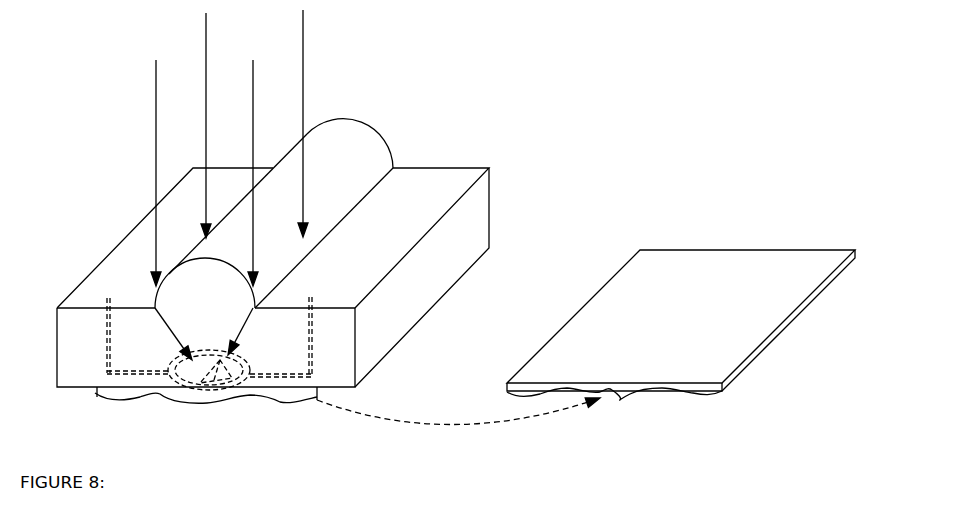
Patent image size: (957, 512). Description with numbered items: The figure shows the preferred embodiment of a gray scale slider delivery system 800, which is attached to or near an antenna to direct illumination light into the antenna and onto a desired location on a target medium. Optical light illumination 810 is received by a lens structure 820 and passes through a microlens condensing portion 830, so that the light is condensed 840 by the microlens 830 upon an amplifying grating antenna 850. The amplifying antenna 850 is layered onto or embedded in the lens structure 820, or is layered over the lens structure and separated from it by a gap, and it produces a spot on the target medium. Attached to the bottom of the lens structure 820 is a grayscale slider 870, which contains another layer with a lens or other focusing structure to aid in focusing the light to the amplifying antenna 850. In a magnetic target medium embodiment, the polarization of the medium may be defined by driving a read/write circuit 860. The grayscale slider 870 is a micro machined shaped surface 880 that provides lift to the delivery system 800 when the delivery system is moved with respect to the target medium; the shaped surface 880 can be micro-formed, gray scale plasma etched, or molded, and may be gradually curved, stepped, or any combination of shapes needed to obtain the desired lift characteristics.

The delivery system 800 is at (432, 113).
The optical light illumination 810 is at (155, 115).
The lens structure 820 is at (442, 185).
The microlens condensing portion 830 is at (212, 292).
The condensed light 840 is at (172, 340).
The amplifying grating antenna 850 is at (222, 360).
The read/write circuit 860 is at (318, 393).
The grayscale slider 870 is at (606, 387).
The shaped surface 880 is at (693, 393).